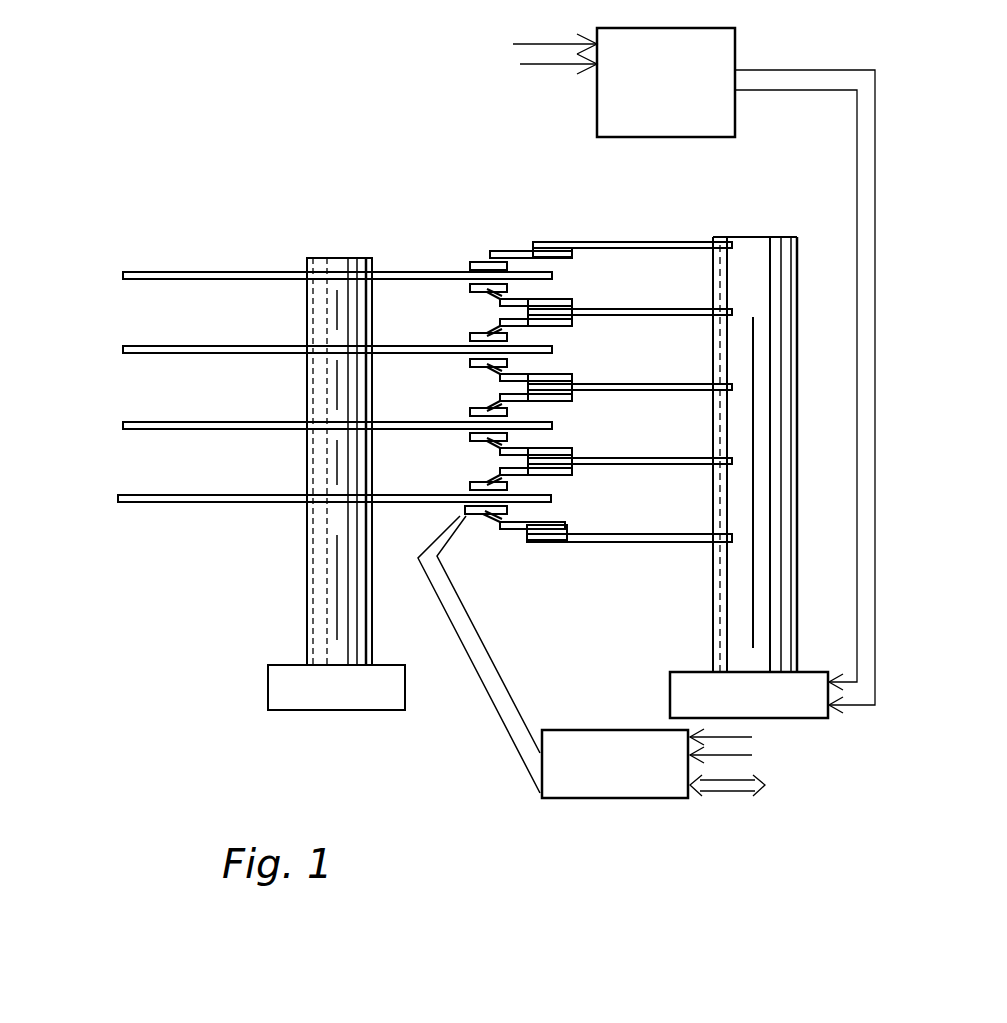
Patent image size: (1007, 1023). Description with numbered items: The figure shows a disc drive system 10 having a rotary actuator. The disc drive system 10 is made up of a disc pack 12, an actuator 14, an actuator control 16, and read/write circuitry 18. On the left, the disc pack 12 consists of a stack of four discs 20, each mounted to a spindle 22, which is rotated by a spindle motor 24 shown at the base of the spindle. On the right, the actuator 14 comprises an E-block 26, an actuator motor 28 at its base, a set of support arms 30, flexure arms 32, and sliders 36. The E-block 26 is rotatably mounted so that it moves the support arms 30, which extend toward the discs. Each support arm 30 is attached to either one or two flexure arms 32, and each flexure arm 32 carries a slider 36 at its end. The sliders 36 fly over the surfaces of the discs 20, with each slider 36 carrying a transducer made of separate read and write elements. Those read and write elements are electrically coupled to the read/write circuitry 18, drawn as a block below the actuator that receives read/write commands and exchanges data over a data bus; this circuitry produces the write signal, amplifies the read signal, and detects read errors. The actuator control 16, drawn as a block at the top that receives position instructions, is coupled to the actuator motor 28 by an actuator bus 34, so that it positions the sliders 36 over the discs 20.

The disc drive system 10 is at (130, 773).
The disc pack 12 is at (315, 442).
The actuator 14 is at (605, 477).
The actuator control 16 is at (632, 137).
The read/write circuitry 18 is at (606, 730).
The discs 20 is at (135, 280).
The spindle 22 is at (318, 258).
The spindle motor 24 is at (268, 690).
The E-block 26 is at (722, 556).
The actuator motor 28 is at (680, 690).
The support arms 30 is at (634, 249).
The flexure arms 32 is at (490, 252).
The actuator bus 34 is at (857, 640).
The sliders 36 is at (470, 266).